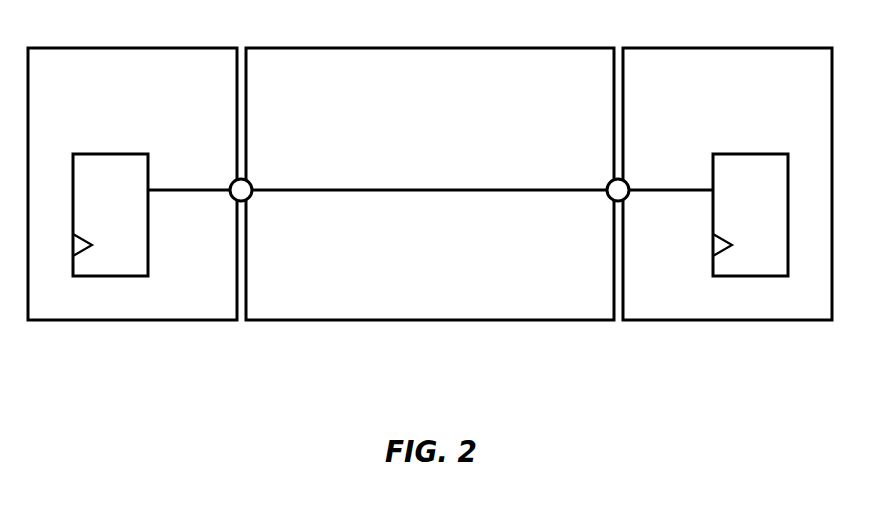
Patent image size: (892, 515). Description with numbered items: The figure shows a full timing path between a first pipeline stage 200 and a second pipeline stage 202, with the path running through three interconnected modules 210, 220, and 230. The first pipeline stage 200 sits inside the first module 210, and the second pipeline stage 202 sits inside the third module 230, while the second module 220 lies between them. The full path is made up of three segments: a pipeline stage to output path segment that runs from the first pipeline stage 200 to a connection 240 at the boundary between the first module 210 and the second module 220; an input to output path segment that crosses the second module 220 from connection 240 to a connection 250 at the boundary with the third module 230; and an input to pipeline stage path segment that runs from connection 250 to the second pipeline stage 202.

The first pipeline stage 200 is at (107, 154).
The second pipeline stage 202 is at (737, 154).
The first module 210 is at (133, 48).
The second module 220 is at (427, 48).
The third module 230 is at (730, 48).
The connection 240 is at (249, 198).
The connection 250 is at (611, 199).